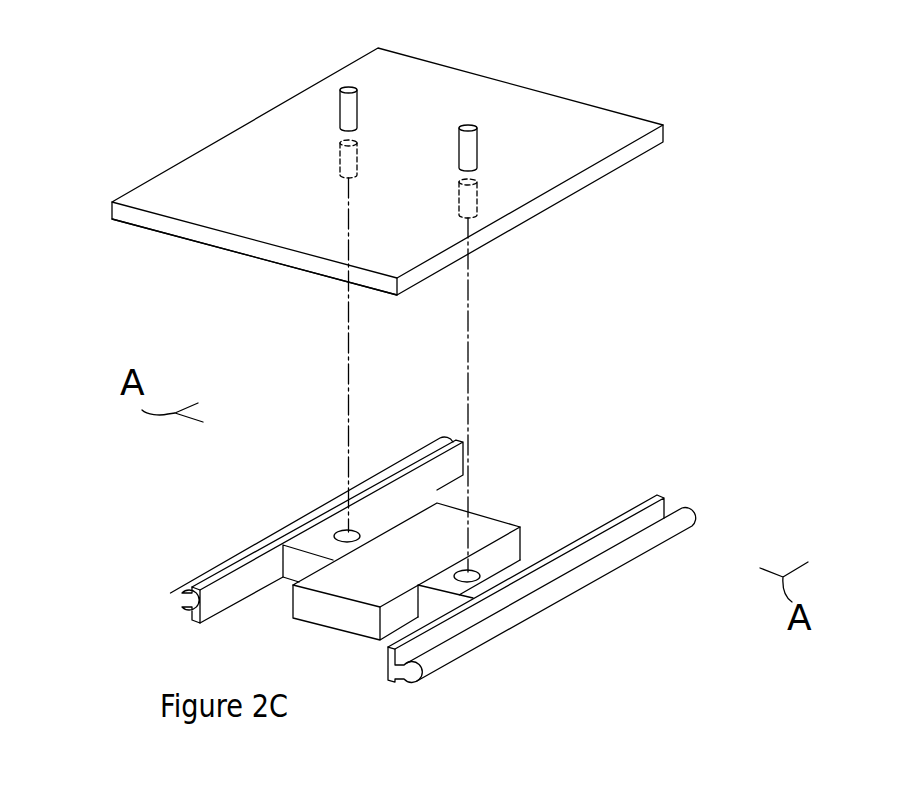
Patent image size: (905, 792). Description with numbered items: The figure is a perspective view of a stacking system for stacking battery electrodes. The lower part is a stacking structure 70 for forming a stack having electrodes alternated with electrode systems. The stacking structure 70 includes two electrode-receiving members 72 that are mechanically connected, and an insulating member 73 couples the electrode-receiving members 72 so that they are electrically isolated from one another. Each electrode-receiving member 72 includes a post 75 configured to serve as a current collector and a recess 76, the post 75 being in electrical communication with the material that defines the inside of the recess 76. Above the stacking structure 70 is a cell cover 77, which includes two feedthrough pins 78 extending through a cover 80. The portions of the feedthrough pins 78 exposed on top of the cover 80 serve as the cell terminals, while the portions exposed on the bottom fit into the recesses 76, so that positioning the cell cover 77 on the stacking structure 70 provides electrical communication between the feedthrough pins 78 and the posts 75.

The stacking structure 70 is at (145, 636).
The electrode-receiving member 72 is at (537, 557).
The insulating member 73 is at (492, 508).
The post 75 is at (220, 568).
The recess 76 is at (344, 530).
The cell cover 77 is at (147, 181).
The feedthrough pin 78 is at (348, 90).
The cover 80 is at (280, 250).